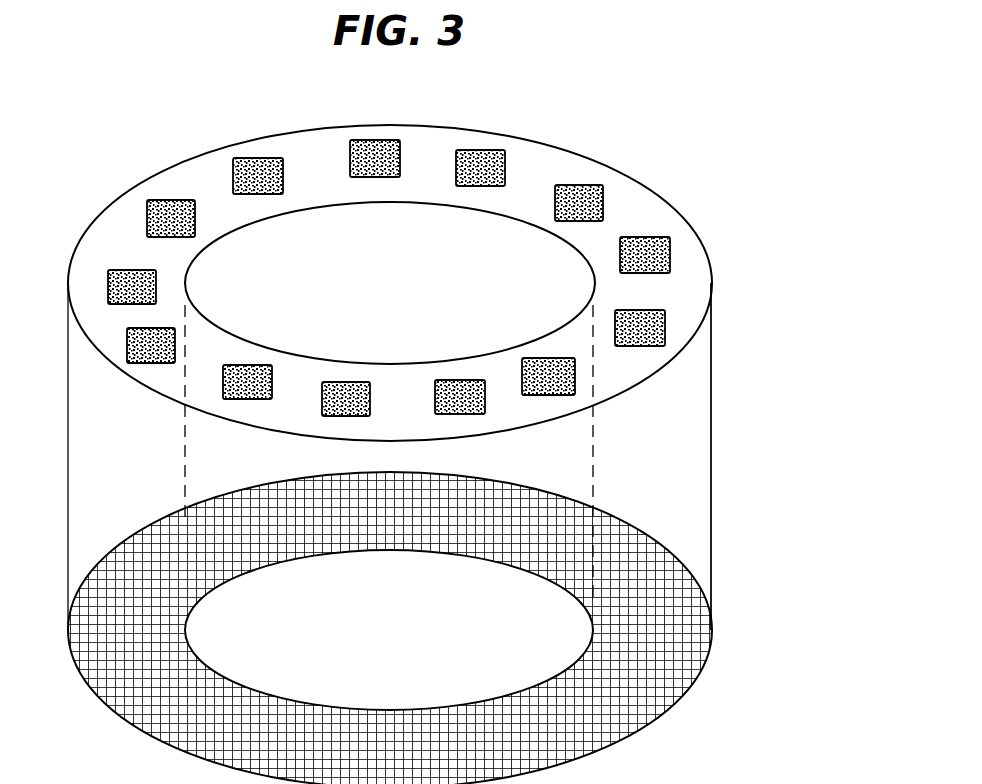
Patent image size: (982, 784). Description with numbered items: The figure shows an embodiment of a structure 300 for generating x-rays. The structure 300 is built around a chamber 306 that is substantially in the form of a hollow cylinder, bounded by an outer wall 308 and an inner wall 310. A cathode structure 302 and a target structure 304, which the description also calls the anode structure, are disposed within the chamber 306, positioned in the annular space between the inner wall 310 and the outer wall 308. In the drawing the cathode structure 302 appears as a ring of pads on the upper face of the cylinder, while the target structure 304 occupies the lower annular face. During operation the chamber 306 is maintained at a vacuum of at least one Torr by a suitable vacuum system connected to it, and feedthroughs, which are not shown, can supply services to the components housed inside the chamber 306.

The structure 300 is at (427, 406).
The cathode structure 302 is at (647, 220).
The target structure 304 is at (140, 705).
The chamber 306 is at (680, 420).
The outer wall 308 is at (712, 526).
The inner wall 310 is at (595, 470).